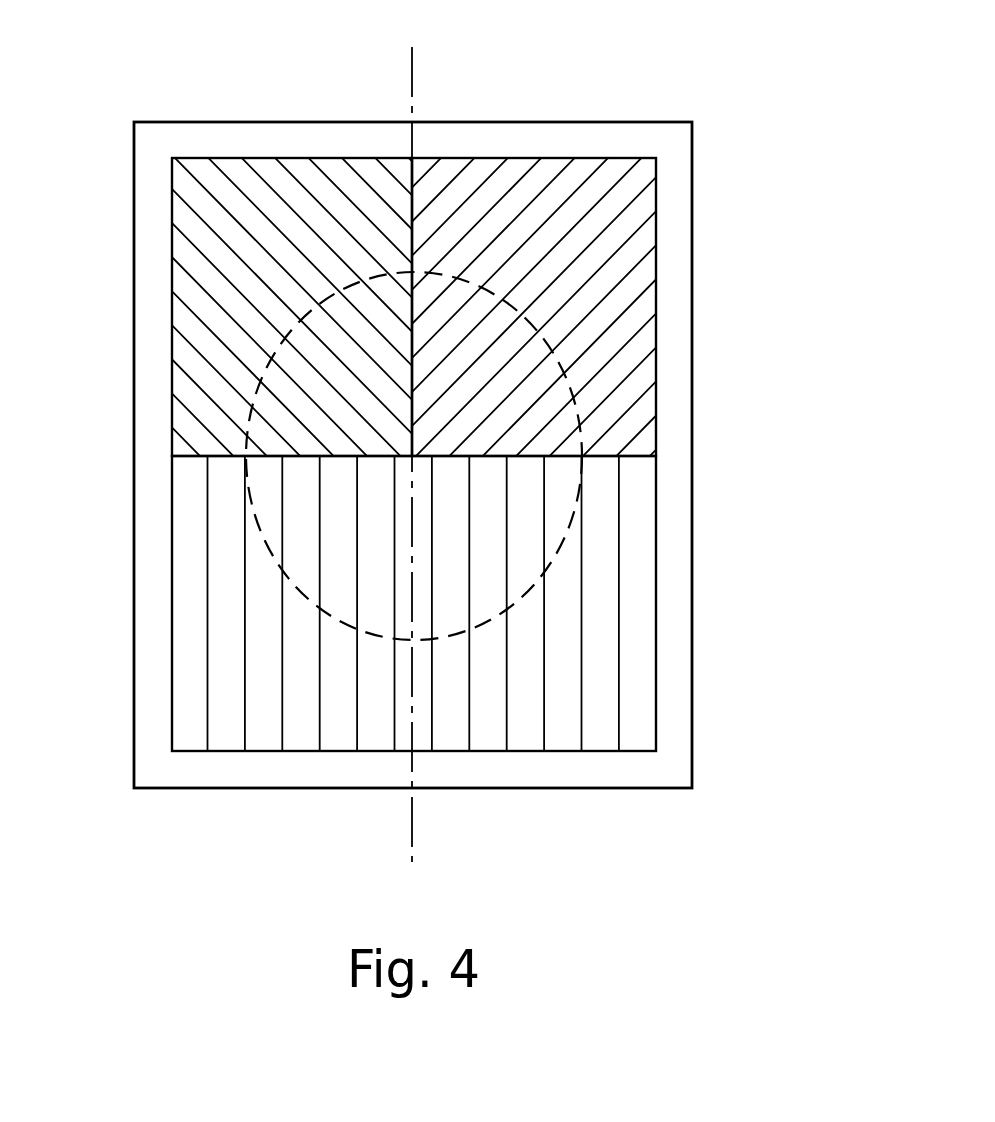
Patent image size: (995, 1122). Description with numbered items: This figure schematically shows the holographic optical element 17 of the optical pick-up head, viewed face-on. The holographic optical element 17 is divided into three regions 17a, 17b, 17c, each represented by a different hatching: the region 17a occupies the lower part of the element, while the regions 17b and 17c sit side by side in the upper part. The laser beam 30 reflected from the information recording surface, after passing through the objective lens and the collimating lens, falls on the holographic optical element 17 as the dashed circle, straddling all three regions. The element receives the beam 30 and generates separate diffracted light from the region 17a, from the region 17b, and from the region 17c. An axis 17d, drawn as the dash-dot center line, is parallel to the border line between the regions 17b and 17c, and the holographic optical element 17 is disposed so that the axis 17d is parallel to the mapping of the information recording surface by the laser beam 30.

The holographic optical element 17 is at (629, 122).
The region 17a is at (656, 658).
The region 17b is at (172, 308).
The region 17c is at (656, 308).
The axis 17d is at (412, 67).
The laser beam 30 is at (576, 521).